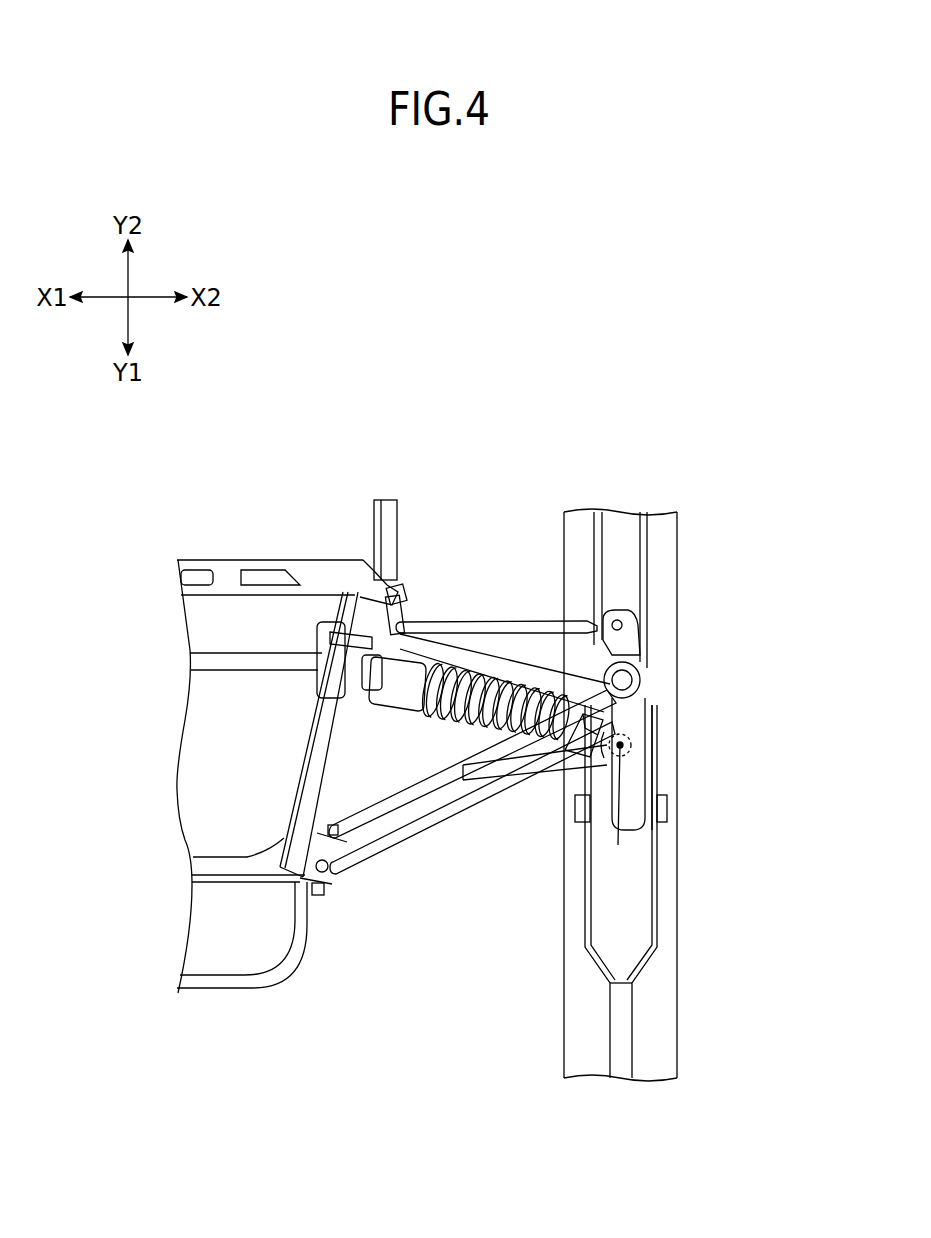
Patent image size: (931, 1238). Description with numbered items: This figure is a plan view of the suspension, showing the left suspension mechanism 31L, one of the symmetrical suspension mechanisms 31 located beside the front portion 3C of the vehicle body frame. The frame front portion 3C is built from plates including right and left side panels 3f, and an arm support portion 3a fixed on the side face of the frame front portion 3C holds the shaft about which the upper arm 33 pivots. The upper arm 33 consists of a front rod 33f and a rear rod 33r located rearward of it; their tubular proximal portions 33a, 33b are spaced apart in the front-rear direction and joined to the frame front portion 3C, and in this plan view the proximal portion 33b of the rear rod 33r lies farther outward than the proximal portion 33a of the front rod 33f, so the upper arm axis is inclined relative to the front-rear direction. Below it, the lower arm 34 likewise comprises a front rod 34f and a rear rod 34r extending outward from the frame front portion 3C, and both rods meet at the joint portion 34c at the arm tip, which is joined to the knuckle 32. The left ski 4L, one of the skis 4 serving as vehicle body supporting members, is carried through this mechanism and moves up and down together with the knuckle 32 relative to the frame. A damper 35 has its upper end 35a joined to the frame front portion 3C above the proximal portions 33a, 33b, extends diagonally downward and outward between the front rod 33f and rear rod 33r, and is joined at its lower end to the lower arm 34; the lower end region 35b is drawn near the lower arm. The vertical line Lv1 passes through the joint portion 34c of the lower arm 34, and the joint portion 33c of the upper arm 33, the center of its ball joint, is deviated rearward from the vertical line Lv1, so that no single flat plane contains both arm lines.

The front portion of the vehicle body frame 3C is at (225, 893).
The arm support portion 3a is at (395, 590).
The side panel 3f is at (317, 768).
The left ski 4L is at (674, 795).
The ski 4 is at (678, 845).
The left suspension mechanism 31L is at (527, 721).
The suspension mechanism 31 is at (527, 721).
The knuckle 32 is at (635, 795).
The upper arm 33 is at (527, 737).
The proximal portion of the front rod 33a is at (326, 874).
The proximal portion of the rear rod 33b is at (412, 605).
The joint portion of the upper arm 33c is at (645, 683).
The rear rod 33r is at (522, 622).
The front rod 33f is at (432, 805).
The lower arm 34 is at (534, 745).
The joint portion of the lower arm 34c is at (635, 740).
The rear rod 34r is at (448, 657).
The front rod 34f is at (497, 785).
The damper 35 is at (439, 713).
The upper end of the damper 35a is at (355, 668).
The spring rear end bracket 35b is at (577, 733).
The vertical line Lv1 is at (625, 810).